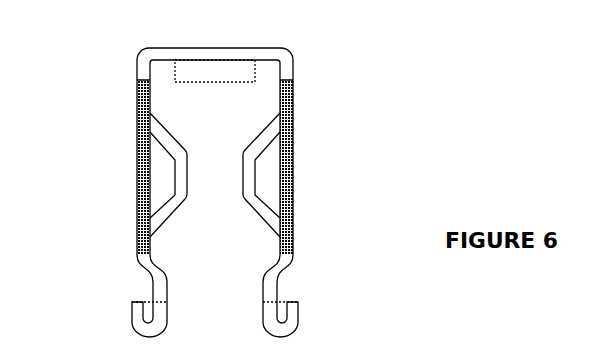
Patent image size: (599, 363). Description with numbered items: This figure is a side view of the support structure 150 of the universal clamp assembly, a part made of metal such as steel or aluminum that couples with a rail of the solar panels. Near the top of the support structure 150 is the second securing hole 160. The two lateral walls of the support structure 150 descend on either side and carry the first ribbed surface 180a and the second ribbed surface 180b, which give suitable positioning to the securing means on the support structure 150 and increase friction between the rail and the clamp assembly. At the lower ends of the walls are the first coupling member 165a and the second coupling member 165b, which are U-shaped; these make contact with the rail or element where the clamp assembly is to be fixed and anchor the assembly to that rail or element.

The support structure 150 is at (260, 169).
The second securing hole 160 is at (238, 70).
The first ribbed surface 180a is at (137, 150).
The second ribbed surface 180b is at (294, 148).
The first coupling member 165a is at (143, 334).
The second coupling member 165b is at (285, 331).